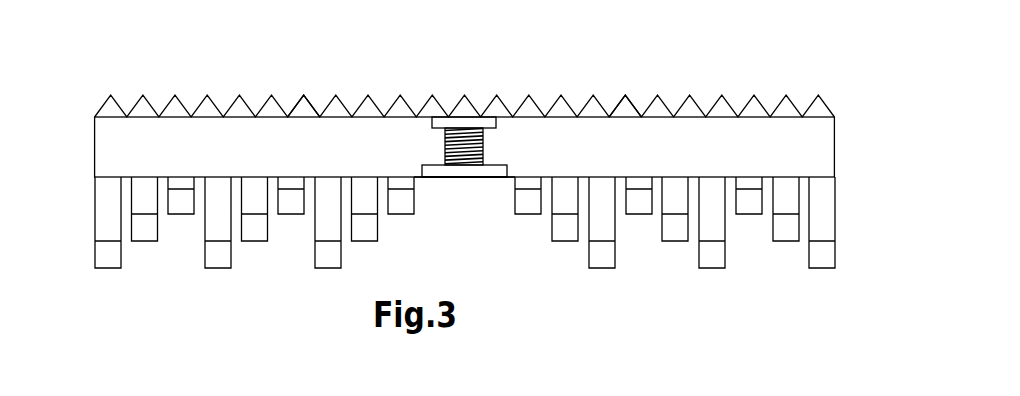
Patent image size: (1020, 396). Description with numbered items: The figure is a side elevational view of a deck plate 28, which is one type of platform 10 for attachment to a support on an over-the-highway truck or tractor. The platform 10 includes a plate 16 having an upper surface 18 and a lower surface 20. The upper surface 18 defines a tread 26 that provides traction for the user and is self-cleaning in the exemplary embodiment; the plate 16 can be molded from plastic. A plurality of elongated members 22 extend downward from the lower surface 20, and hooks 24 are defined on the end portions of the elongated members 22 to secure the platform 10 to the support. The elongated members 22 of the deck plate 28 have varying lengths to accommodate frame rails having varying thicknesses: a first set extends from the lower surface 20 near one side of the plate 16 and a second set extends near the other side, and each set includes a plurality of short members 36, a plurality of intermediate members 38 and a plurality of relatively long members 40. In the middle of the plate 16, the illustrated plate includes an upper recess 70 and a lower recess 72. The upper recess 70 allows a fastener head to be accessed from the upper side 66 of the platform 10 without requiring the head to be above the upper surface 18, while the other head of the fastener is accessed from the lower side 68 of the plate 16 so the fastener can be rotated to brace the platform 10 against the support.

The platform 10 is at (562, 53).
The plate 16 is at (210, 131).
The upper surface 18 is at (302, 108).
The lower surface 20 is at (418, 178).
The elongated members 22 is at (108, 242).
The hooks 24 is at (142, 232).
The tread 26 is at (623, 110).
The deck plate 28 is at (356, 88).
The short members 36 is at (747, 217).
The intermediate members 38 is at (782, 243).
The relatively long members 40 is at (825, 268).
The upper side 66 is at (502, 82).
The lower side 68 is at (482, 270).
The upper recess 70 is at (450, 123).
The lower recess 72 is at (503, 178).